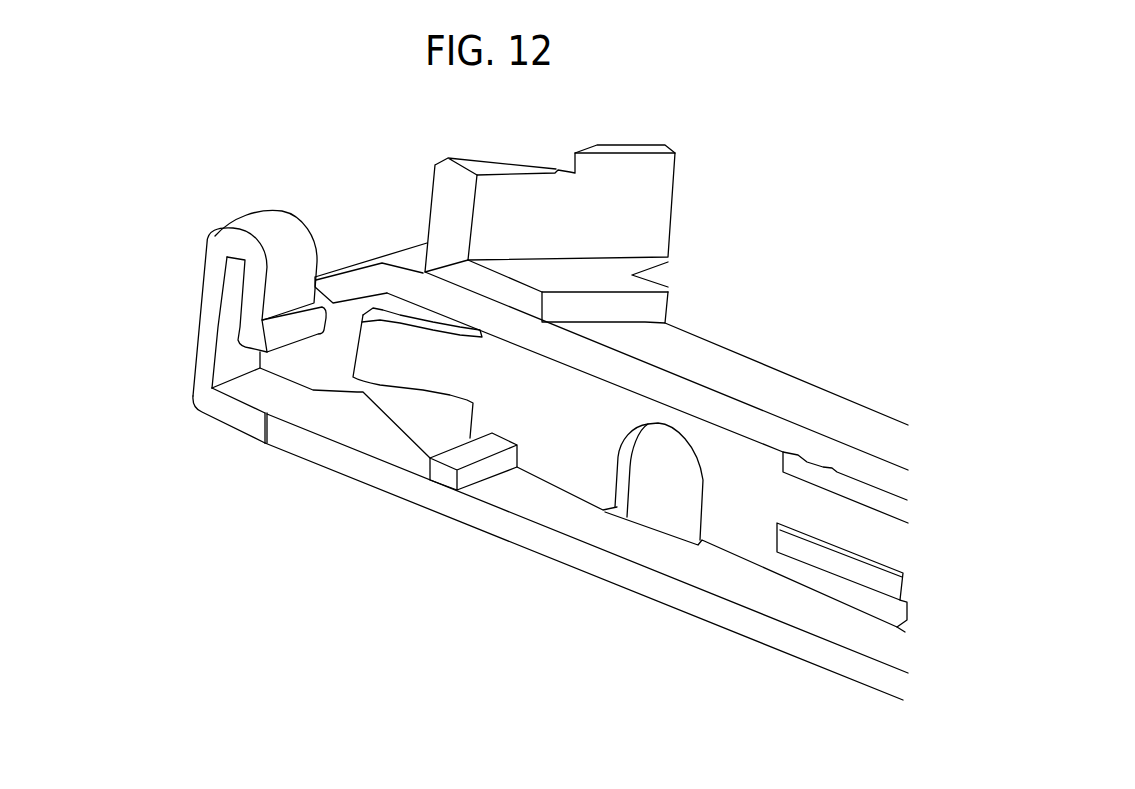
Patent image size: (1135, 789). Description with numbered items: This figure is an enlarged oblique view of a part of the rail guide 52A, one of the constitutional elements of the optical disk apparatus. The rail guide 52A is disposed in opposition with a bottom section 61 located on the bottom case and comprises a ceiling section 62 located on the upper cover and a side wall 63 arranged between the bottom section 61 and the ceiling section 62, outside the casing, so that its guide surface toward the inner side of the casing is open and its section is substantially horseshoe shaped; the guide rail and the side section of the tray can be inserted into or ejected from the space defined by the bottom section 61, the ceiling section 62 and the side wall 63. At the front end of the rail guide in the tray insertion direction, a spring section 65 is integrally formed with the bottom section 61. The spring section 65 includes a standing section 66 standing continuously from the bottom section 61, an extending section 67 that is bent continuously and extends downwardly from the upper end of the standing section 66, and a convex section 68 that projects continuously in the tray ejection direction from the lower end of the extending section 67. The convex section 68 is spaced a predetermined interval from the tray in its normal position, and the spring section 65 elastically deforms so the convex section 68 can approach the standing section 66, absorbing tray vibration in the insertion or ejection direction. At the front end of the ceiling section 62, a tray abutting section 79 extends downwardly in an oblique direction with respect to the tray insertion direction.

The rail guide 52A is at (716, 237).
The bottom section 61 is at (548, 505).
The ceiling section 62 is at (777, 387).
The side wall 63 is at (730, 510).
The spring section 65 is at (249, 332).
The standing section 66 is at (212, 278).
The extending section 67 is at (287, 267).
The convex section 68 is at (303, 330).
The tray abutting section 79 is at (355, 283).